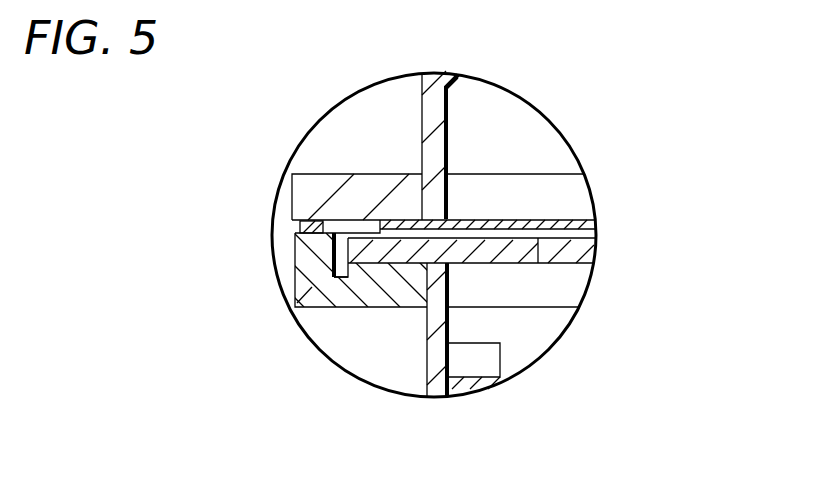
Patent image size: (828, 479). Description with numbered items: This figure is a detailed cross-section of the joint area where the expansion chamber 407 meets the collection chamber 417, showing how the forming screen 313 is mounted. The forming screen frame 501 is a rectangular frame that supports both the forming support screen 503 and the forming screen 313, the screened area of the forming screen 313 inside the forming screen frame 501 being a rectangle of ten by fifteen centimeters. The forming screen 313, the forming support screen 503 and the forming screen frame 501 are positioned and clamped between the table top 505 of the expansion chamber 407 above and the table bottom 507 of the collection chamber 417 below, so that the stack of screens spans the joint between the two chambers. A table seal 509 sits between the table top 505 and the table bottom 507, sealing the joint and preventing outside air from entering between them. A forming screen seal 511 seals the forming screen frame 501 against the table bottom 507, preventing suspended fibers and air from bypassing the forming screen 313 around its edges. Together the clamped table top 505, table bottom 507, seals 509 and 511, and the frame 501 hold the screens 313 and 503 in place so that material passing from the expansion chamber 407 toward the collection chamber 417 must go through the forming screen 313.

The expansion chamber 407 is at (414, 118).
The table top 505 is at (325, 176).
The table seal 509 is at (300, 228).
The table bottom 507 is at (300, 306).
The forming screen 313 is at (548, 218).
The forming support screen 503 is at (588, 253).
The forming screen frame 501 is at (522, 264).
The forming screen seal 511 is at (450, 268).
The collection chamber 417 is at (457, 343).